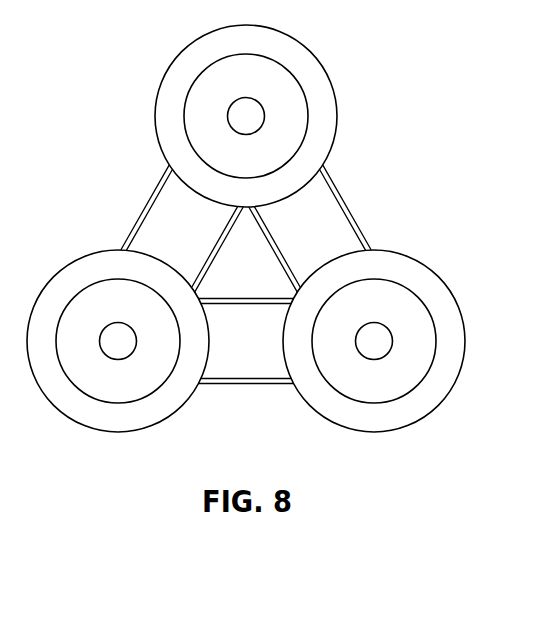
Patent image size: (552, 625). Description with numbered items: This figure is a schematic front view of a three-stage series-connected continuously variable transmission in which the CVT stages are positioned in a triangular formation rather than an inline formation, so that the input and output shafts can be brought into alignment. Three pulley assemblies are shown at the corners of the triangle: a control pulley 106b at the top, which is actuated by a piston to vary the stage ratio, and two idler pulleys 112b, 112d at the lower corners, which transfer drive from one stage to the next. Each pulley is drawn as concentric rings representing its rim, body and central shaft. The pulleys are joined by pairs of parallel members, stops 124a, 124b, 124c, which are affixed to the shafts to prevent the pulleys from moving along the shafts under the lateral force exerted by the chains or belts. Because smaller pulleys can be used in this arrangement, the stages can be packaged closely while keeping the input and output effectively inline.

The control pulley 106b is at (158, 115).
The idler pulley 112b is at (118, 433).
The idler pulley 112d is at (425, 263).
The stop 124a is at (148, 203).
The stop 124b is at (265, 384).
The stop 124c is at (358, 222).